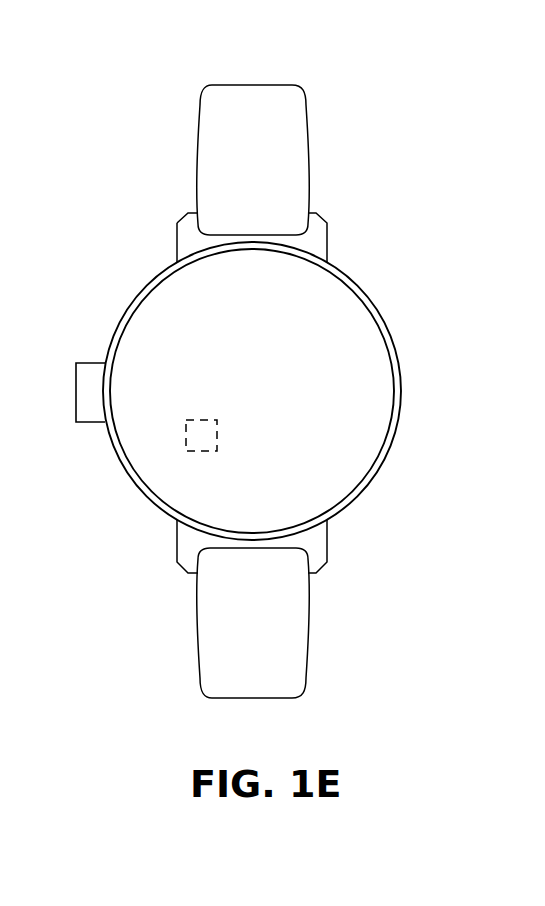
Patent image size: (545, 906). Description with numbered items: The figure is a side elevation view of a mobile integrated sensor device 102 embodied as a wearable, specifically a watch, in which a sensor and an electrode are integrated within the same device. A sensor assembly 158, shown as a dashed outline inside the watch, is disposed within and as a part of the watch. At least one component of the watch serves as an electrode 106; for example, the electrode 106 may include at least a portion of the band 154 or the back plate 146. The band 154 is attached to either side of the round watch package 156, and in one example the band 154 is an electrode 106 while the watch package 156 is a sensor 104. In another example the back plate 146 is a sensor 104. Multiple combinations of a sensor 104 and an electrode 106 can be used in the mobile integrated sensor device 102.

The mobile integrated sensor device 102 is at (410, 234).
The sensor 104 is at (187, 242).
The electrode 106 is at (192, 222).
The back plate 146 is at (353, 342).
The band 154 is at (273, 100).
The watch package 156 is at (394, 510).
The sensor assembly 158 is at (186, 425).